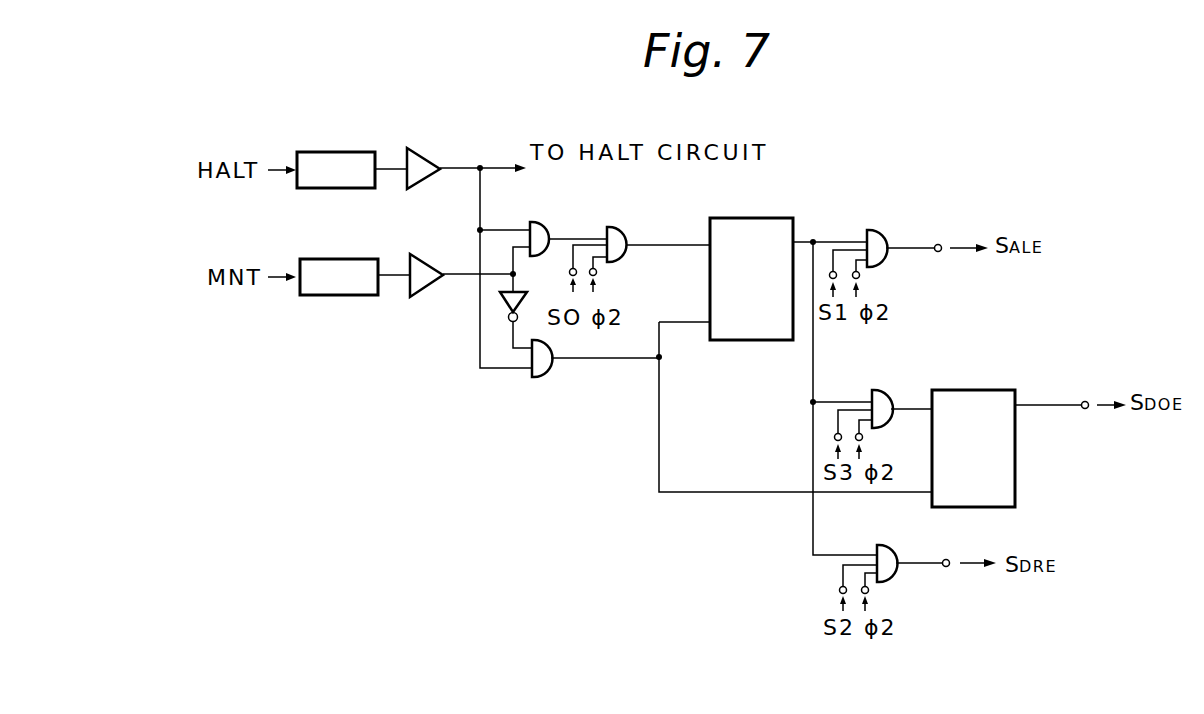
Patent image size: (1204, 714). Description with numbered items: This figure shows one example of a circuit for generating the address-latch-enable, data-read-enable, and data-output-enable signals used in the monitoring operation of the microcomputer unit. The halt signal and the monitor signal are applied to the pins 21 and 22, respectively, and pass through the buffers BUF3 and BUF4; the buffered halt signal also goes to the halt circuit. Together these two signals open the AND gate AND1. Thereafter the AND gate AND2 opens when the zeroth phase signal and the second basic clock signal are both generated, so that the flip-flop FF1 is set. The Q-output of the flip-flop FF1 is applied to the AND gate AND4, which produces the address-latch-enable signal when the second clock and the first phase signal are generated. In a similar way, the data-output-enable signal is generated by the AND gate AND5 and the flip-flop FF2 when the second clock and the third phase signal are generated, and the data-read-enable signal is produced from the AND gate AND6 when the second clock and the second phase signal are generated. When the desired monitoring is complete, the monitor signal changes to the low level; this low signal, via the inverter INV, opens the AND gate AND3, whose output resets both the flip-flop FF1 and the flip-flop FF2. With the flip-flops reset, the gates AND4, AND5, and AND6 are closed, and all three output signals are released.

The pin 21 is at (340, 152).
The pin 22 is at (340, 295).
The buffer BUF3 is at (423, 146).
The buffer BUF4 is at (427, 289).
The inverter INV is at (506, 312).
The AND gate AND1 is at (543, 222).
The AND gate AND2 is at (620, 230).
The AND gate AND3 is at (545, 377).
The AND gate AND4 is at (880, 230).
The AND gate AND5 is at (887, 380).
The AND gate AND6 is at (885, 545).
The flip-flop FF1 is at (760, 340).
The flip-flop FF2 is at (980, 390).